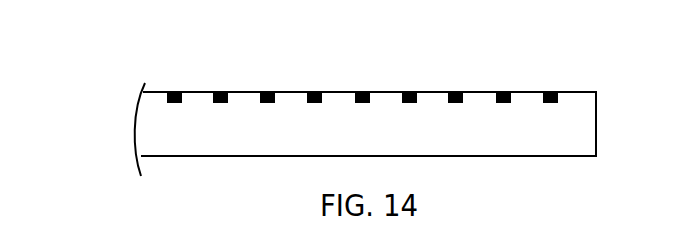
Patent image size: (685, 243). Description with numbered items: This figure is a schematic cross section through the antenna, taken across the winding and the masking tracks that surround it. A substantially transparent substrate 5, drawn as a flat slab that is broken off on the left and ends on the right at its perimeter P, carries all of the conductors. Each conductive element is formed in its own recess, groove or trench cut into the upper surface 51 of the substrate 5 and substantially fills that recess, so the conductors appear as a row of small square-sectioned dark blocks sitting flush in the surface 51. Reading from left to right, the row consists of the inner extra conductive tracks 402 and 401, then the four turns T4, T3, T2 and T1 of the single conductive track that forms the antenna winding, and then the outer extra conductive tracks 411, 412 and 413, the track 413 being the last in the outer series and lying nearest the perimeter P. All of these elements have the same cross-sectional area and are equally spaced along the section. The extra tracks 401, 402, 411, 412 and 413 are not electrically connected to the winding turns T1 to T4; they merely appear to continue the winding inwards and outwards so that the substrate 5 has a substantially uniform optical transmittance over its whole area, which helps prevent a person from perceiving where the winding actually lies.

The substrate 5 is at (580, 140).
The perimeter P is at (597, 92).
The surface 51 is at (477, 91).
The extra conductive track inside the winding 401 is at (220, 91).
The last extra conductive track inside the winding 402 is at (175, 91).
The first turn T1 is at (410, 91).
The second turn T2 is at (363, 91).
The third turn T3 is at (317, 91).
The fourth turn T4 is at (267, 91).
The extra conductive track outside the winding 411 is at (458, 91).
The extra conductive track outside the winding 412 is at (503, 92).
The last extra conductive track outside the winding 413 is at (551, 92).